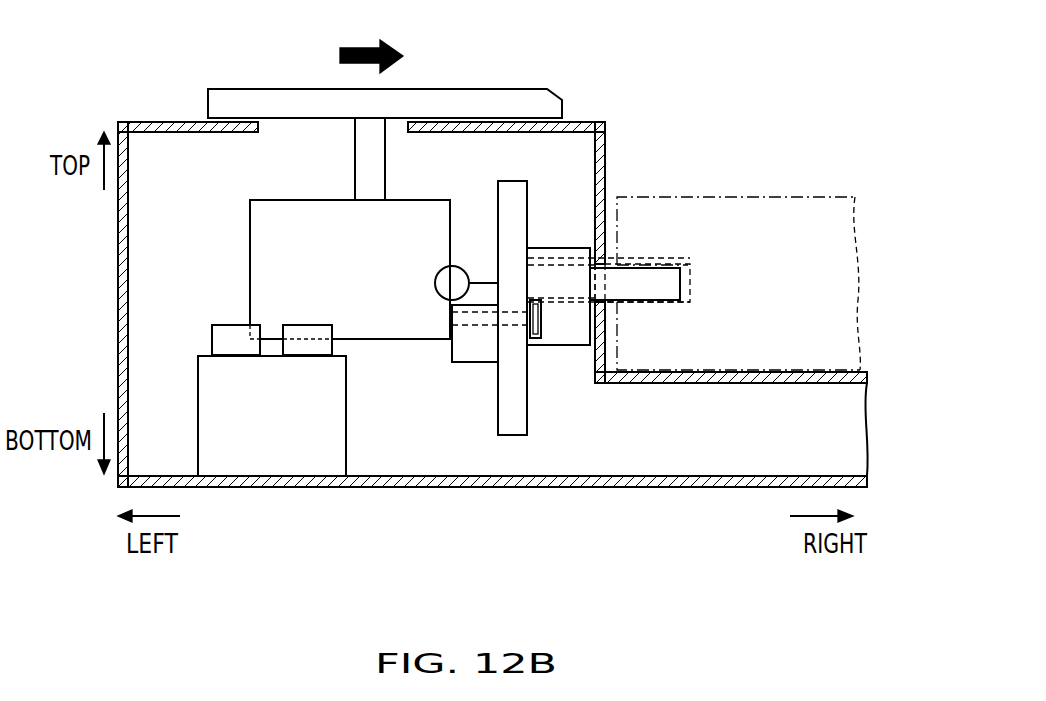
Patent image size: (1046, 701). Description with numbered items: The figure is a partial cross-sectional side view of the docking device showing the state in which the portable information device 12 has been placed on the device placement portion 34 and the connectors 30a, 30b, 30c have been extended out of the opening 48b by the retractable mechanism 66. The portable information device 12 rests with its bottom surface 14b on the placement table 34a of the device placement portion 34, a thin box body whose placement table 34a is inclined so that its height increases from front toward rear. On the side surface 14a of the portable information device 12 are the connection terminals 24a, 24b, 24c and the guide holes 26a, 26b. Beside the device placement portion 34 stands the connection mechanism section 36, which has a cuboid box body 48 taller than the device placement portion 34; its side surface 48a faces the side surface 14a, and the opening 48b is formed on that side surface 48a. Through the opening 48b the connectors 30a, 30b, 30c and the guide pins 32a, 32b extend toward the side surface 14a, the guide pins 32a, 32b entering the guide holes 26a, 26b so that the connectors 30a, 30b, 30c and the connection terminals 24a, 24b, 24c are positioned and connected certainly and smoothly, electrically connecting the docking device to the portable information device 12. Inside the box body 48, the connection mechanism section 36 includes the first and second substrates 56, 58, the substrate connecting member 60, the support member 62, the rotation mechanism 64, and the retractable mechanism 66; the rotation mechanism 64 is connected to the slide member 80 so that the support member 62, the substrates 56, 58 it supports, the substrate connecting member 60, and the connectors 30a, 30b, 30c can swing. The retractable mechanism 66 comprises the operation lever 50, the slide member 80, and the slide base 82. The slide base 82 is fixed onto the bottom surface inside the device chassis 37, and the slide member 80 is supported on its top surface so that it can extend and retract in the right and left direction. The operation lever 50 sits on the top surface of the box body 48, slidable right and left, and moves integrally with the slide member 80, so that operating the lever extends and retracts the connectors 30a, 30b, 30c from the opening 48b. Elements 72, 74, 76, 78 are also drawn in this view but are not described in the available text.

The portable information device 12 is at (810, 192).
The side surface 14a is at (613, 385).
The bottom surface 14b is at (797, 385).
The connection terminal 24a is at (640, 451).
The connection terminal 24b is at (640, 451).
The connection terminal 24c is at (640, 451).
The guide hole 26a is at (640, 451).
The guide hole 26b is at (666, 297).
The connector 30a is at (693, 206).
The connector 30b is at (693, 206).
The connector 30c is at (660, 282).
The guide pin 32a is at (693, 206).
The guide pin 32b is at (693, 206).
The device placement portion 34 is at (760, 506).
The placement table 34a is at (810, 370).
The connection mechanism section 36 is at (94, 98).
The device chassis 37 is at (256, 506).
The box body 48 is at (118, 218).
The side surface 48a is at (607, 157).
The opening 48b is at (608, 260).
The operation lever 50 is at (282, 103).
The first substrate 56 is at (515, 229).
The second substrate 58 is at (516, 193).
The substrate connecting member 60 is at (578, 330).
The support member 62 is at (467, 352).
The rotation mechanism 64 is at (460, 265).
The retractable mechanism 66 is at (194, 317).
The terminal 72 is at (537, 330).
The axis 74 is at (538, 248).
The guide pin 76 is at (502, 461).
The guide pin 78 is at (515, 333).
The slide member 80 is at (270, 250).
The slide base 82 is at (322, 458).